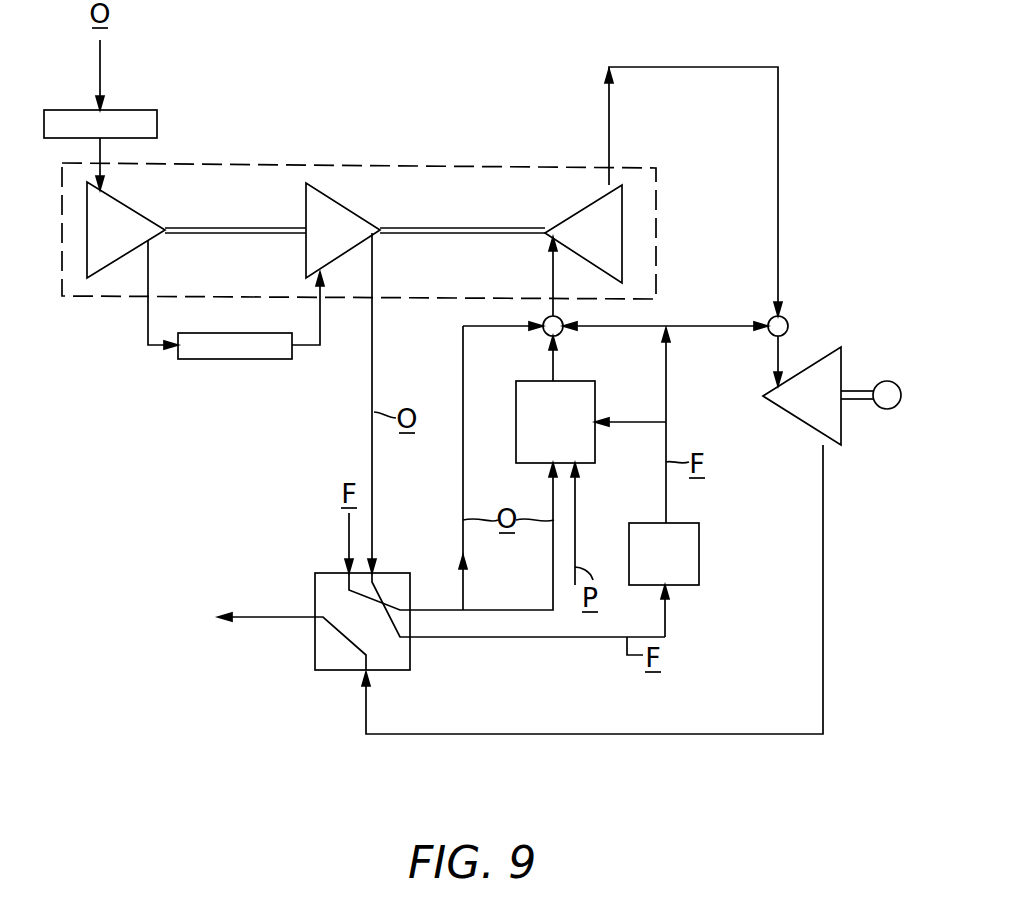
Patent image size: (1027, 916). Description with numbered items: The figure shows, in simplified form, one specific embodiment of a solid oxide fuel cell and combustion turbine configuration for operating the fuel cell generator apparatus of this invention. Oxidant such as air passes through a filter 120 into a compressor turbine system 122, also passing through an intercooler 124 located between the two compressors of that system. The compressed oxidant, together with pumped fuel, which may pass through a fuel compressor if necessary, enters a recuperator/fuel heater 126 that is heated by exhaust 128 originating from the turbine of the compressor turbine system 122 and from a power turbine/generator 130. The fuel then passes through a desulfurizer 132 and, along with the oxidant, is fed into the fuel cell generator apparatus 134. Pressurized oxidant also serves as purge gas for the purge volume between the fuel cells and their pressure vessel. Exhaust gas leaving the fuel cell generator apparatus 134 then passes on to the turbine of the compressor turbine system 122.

The filter 120 is at (128, 110).
The compressor turbine system 122 is at (326, 153).
The intercooler 124 is at (230, 359).
The recuperator/fuel heater 126 is at (315, 592).
The exhaust 128 is at (778, 211).
The power turbine/generator 130 is at (841, 365).
The desulfurizer 132 is at (699, 553).
The fuel cell generator apparatus 134 is at (595, 400).